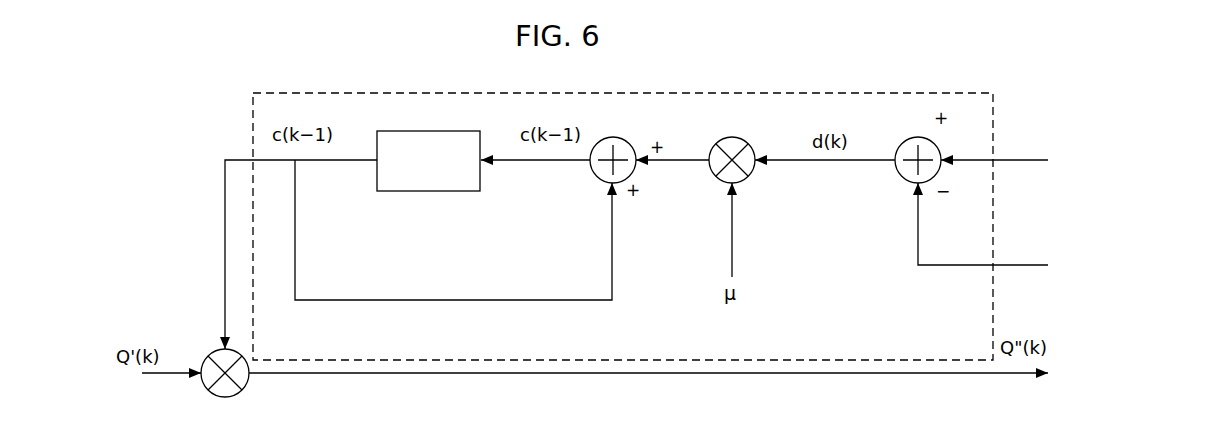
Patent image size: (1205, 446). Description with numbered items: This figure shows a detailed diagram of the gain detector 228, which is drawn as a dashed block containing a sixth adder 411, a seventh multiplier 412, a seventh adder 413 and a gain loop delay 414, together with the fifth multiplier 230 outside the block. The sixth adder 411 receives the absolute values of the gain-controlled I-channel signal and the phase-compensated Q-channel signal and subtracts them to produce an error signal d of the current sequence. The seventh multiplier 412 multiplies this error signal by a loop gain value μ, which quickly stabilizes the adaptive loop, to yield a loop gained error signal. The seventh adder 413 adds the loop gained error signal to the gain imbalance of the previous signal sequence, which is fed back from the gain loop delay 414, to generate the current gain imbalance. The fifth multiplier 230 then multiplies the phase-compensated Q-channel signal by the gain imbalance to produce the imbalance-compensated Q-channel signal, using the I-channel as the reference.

The gain detector 228 is at (940, 93).
The fifth multiplier 230 is at (209, 390).
The sixth adder 411 is at (936, 146).
The seventh multiplier 412 is at (750, 146).
The seventh adder 413 is at (630, 146).
The gain loop delay 414 is at (430, 131).